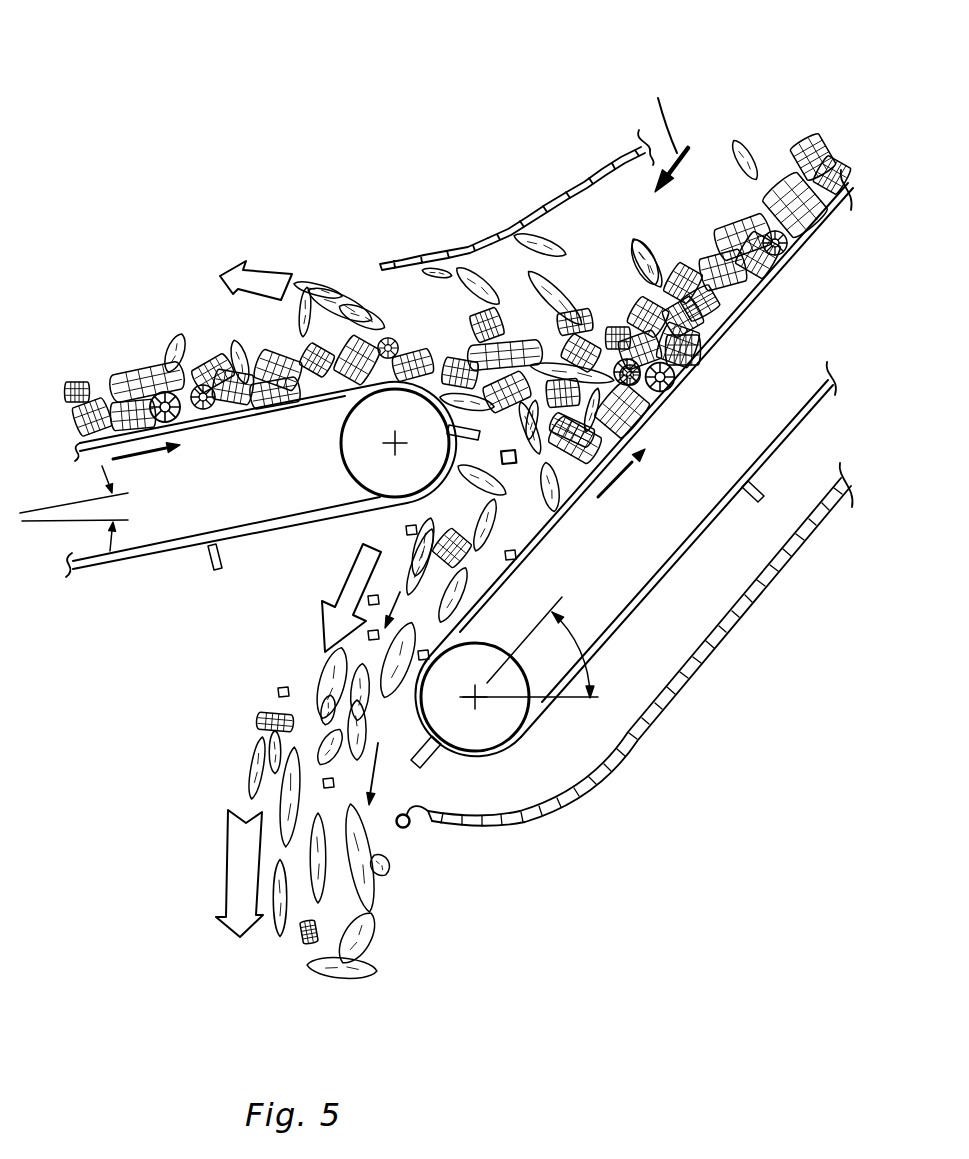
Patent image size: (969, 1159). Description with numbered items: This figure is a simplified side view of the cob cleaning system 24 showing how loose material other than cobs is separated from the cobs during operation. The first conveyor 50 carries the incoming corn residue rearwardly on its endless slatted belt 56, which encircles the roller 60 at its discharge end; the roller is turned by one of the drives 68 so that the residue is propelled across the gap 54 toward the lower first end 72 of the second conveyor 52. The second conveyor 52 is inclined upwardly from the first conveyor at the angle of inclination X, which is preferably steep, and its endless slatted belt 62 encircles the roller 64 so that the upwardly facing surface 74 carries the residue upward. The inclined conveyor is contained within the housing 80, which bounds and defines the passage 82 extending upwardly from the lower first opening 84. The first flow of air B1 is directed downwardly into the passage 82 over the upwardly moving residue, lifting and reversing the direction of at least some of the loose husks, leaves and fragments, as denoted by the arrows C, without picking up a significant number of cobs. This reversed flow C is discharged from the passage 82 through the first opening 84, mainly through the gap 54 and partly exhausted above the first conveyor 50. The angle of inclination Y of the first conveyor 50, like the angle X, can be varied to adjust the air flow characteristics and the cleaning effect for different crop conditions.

The cob cleaning system 24 is at (275, 93).
The first conveyor 50 is at (268, 512).
The endless slatted belt 56 is at (123, 562).
The gap 54 is at (390, 525).
The roller 60 is at (338, 443).
The drives 68 is at (343, 444).
The second conveyor 52 is at (625, 499).
The endless slatted belt 62 is at (618, 638).
The roller 64 is at (487, 683).
The lower first end 72 is at (641, 413).
The upwardly facing surface 74 is at (527, 532).
The housing 80 is at (563, 203).
The passage 82 is at (603, 226).
The first opening 84 is at (385, 285).
The first flow of air B1 is at (478, 854).
The MOC flow arrows C is at (270, 262).
The angle of inclination of the second conveyor X is at (589, 642).
The angle of inclination of the first conveyor Y is at (110, 552).